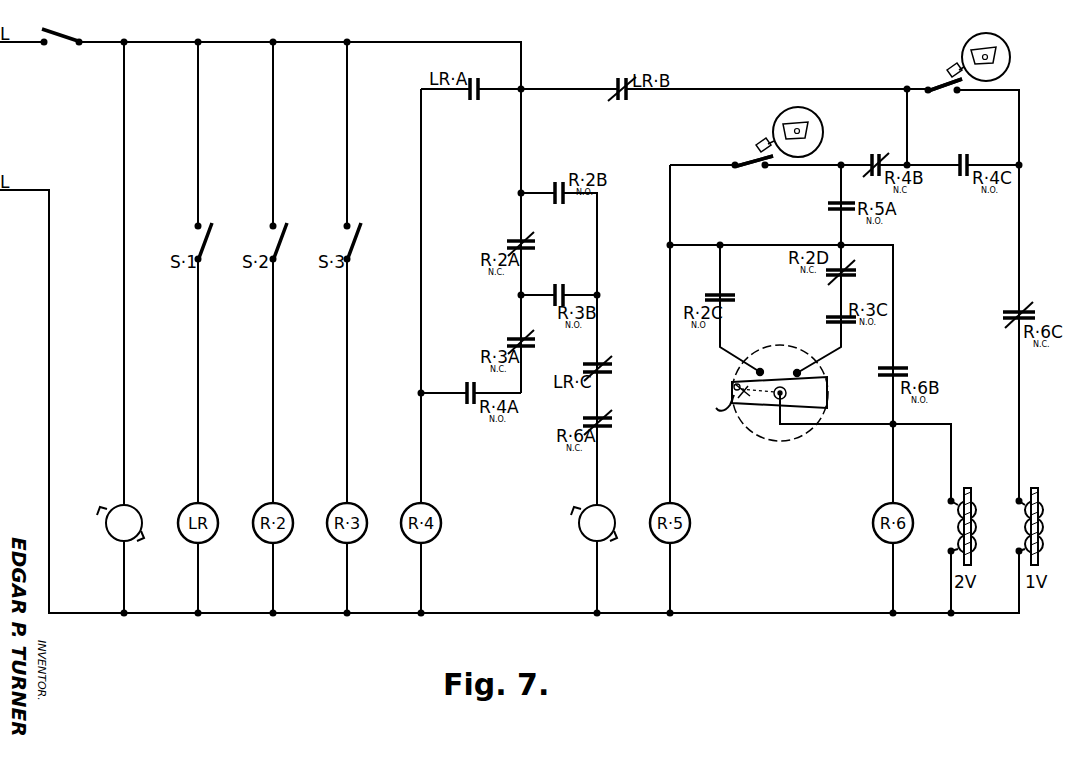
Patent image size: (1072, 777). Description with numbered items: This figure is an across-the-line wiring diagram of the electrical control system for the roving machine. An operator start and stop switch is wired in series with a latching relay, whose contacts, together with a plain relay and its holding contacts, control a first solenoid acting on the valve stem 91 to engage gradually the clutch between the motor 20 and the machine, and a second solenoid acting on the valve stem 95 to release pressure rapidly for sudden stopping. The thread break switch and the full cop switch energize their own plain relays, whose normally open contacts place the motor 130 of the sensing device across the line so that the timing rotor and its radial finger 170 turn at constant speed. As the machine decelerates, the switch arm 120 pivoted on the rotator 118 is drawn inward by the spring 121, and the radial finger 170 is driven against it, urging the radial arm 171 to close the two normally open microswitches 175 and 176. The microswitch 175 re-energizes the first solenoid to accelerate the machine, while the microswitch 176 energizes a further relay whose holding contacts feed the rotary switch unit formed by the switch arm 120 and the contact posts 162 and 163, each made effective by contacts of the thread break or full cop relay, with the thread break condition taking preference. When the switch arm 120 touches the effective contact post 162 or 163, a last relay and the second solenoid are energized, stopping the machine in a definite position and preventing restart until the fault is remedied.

The motor 20 is at (120, 523).
The motor 130 is at (594, 523).
The radial finger 170 is at (996, 47).
The radial arm 171 is at (947, 68).
The microswitch 175 is at (945, 93).
The microswitch 176 is at (753, 170).
The rotator 118 is at (820, 395).
The switch arm 120 is at (719, 417).
The spring 121 is at (746, 398).
The contact post 162 is at (760, 369).
The contact post 163 is at (798, 370).
The valve stem 95 is at (971, 497).
The valve stem 91 is at (1038, 497).